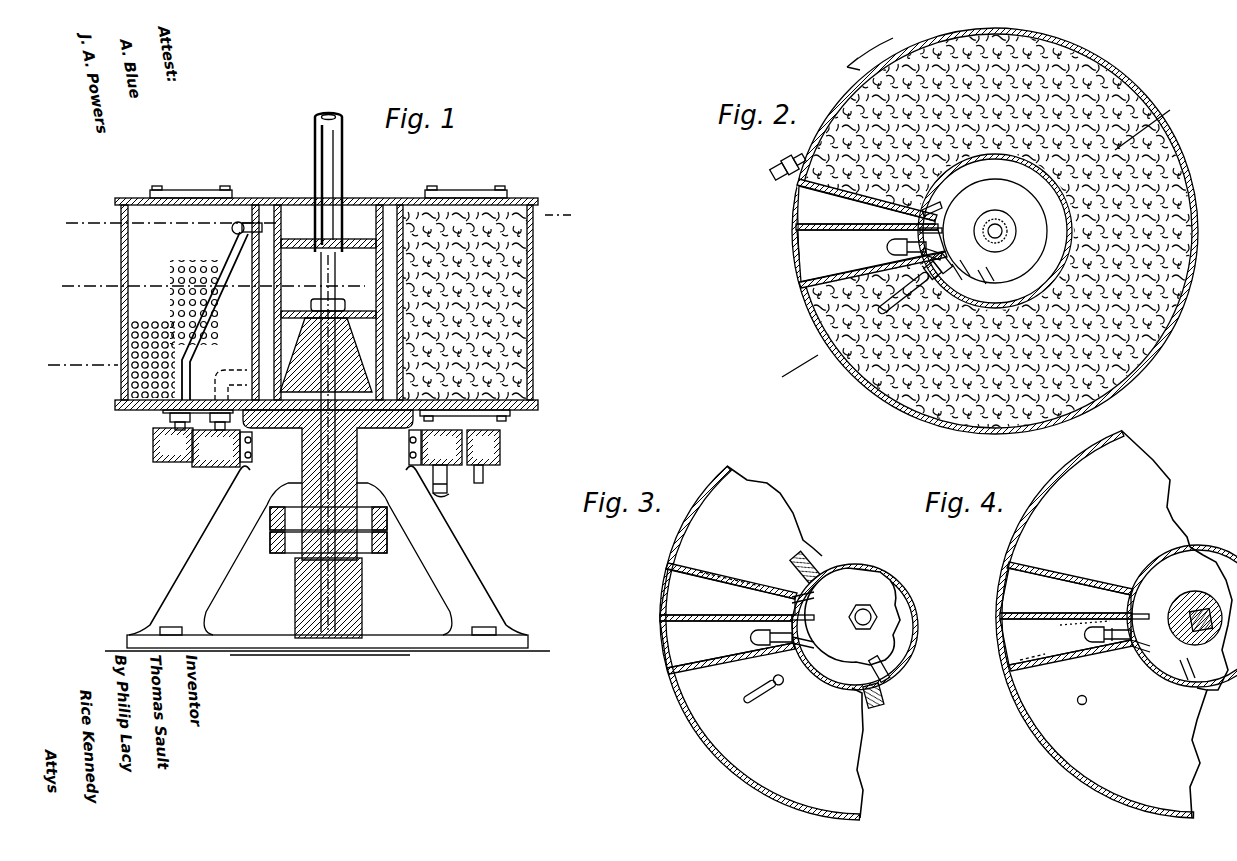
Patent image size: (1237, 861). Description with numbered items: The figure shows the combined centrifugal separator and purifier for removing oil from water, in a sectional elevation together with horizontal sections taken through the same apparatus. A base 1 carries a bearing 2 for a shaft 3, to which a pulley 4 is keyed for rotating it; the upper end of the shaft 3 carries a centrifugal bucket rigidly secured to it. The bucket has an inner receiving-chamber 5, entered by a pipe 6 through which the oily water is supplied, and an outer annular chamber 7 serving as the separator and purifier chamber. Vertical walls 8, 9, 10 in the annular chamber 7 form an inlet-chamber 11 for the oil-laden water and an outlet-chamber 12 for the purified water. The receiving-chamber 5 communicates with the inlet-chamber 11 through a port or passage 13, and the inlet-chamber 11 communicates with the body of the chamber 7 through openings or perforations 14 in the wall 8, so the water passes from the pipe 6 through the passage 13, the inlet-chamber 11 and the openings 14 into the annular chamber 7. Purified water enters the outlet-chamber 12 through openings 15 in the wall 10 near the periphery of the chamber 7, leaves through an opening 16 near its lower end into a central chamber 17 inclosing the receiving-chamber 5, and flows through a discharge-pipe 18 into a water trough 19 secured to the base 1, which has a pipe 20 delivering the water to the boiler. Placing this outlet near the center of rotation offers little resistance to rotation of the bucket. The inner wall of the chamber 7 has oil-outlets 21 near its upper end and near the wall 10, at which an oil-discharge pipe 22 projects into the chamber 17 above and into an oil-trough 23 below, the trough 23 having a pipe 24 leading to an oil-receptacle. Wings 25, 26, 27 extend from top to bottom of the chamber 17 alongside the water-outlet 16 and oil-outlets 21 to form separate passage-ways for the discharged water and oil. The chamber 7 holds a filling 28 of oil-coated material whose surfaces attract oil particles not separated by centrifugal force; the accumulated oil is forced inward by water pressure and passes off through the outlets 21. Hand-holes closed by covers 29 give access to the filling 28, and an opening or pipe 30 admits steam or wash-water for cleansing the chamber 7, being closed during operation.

In FIG. 1, the base 1 is at (236, 490).
In FIG. 2, the base 1 is at (975, 236).
In FIG. 1, the bearing 2 is at (302, 462).
In FIG. 1, the shaft 3 is at (214, 442).
In FIG. 3, the shaft 3 is at (878, 612).
In FIG. 4, the shaft 3 is at (1180, 606).
In FIG. 1, the pulley 4 is at (268, 566).
In FIG. 1, the inner receiving-chamber 5 is at (328, 302).
In FIG. 2, the inner receiving-chamber 5 is at (995, 231).
In FIG. 3, the inner receiving-chamber 5 is at (852, 616).
In FIG. 1, the pipe 6 is at (341, 186).
In FIG. 2, the pipe 6 is at (1001, 227).
In FIG. 1, the outer annular chamber 7 is at (542, 262).
In FIG. 2, the outer annular chamber 7 is at (1100, 318).
In FIG. 3, the outer annular chamber 7 is at (761, 643).
In FIG. 4, the outer annular chamber 7 is at (1114, 624).
In FIG. 2, the vertical wall 8 is at (818, 186).
In FIG. 3, the vertical wall 8 is at (700, 566).
In FIG. 4, the vertical wall 8 is at (1047, 570).
In FIG. 2, the vertical wall 9 is at (867, 219).
In FIG. 3, the vertical wall 9 is at (686, 615).
In FIG. 4, the vertical wall 9 is at (1020, 618).
In FIG. 1, the vertical wall 10 is at (128, 306).
In FIG. 2, the vertical wall 10 is at (873, 269).
In FIG. 3, the vertical wall 10 is at (703, 663).
In FIG. 4, the vertical wall 10 is at (1120, 653).
In FIG. 2, the inlet-chamber 11 is at (866, 205).
In FIG. 3, the inlet-chamber 11 is at (727, 592).
In FIG. 4, the inlet-chamber 11 is at (1065, 590).
In FIG. 2, the outlet-chamber 12 is at (871, 256).
In FIG. 3, the outlet-chamber 12 is at (726, 644).
In FIG. 4, the outlet-chamber 12 is at (1065, 642).
In FIG. 2, the port or passage 13 is at (939, 201).
In FIG. 3, the port or passage 13 is at (792, 600).
In FIG. 1, the openings or perforations 14 is at (376, 366).
In FIG. 3, the openings or perforations 14 is at (716, 572).
In FIG. 1, the openings 15 is at (128, 360).
In FIG. 4, the openings 15 is at (1020, 670).
In FIG. 4, the opening 16 is at (1083, 625).
In FIG. 1, the central chamber 17 is at (332, 355).
In FIG. 2, the central chamber 17 is at (995, 231).
In FIG. 3, the central chamber 17 is at (888, 671).
In FIG. 4, the central chamber 17 is at (1182, 616).
In FIG. 1, the discharge-pipe 18 is at (236, 370).
In FIG. 2, the discharge-pipe 18 is at (906, 232).
In FIG. 3, the discharge-pipe 18 is at (752, 636).
In FIG. 4, the discharge-pipe 18 is at (1090, 634).
In FIG. 1, the water trough or receptacle 19 is at (218, 462).
In FIG. 1, the pipe 20 is at (446, 495).
In FIG. 1, the openings or oil-outlets 21 is at (262, 242).
In FIG. 2, the openings or oil-outlets 21 is at (968, 273).
In FIG. 1, the oil-discharge pipe 22 is at (232, 228).
In FIG. 2, the oil-discharge pipe 22 is at (880, 308).
In FIG. 3, the oil-discharge pipe 22 is at (768, 692).
In FIG. 4, the oil-discharge pipe 22 is at (1095, 694).
In FIG. 1, the oil-trough 23 is at (153, 450).
In FIG. 1, the pipe 24 is at (484, 476).
In FIG. 2, the wing 25 is at (995, 274).
In FIG. 3, the wing 25 is at (874, 662).
In FIG. 4, the wing 25 is at (1197, 668).
In FIG. 2, the wing 26 is at (943, 255).
In FIG. 3, the wing 26 is at (816, 642).
In FIG. 4, the wing 26 is at (1154, 651).
In FIG. 2, the wing 27 is at (942, 228).
In FIG. 3, the wing 27 is at (814, 619).
In FIG. 4, the wing 27 is at (1145, 606).
In FIG. 1, the filling 28 is at (470, 330).
In FIG. 2, the filling 28 is at (925, 350).
In FIG. 1, the covers 29 is at (207, 191).
In FIG. 2, the opening or pipe 30 is at (786, 168).